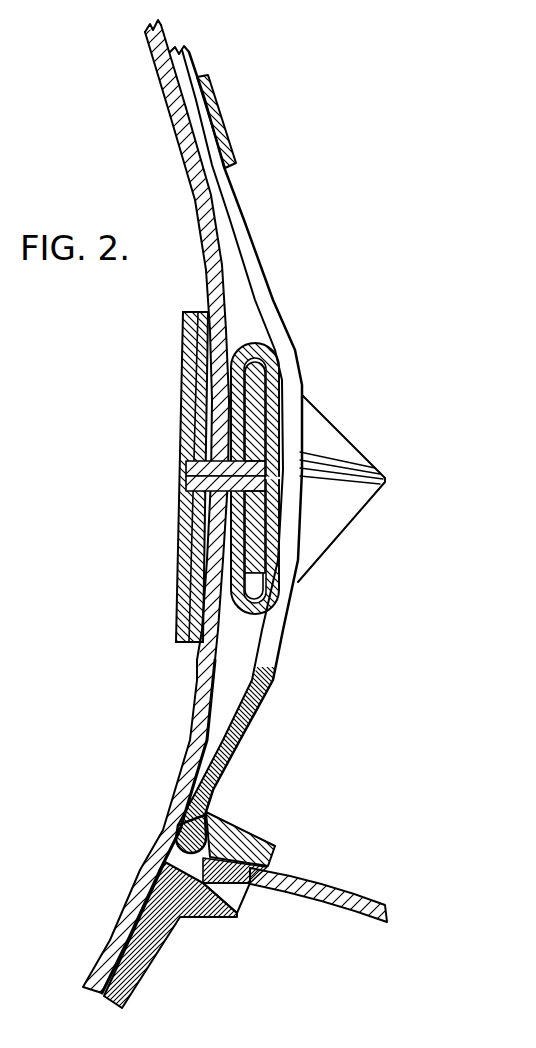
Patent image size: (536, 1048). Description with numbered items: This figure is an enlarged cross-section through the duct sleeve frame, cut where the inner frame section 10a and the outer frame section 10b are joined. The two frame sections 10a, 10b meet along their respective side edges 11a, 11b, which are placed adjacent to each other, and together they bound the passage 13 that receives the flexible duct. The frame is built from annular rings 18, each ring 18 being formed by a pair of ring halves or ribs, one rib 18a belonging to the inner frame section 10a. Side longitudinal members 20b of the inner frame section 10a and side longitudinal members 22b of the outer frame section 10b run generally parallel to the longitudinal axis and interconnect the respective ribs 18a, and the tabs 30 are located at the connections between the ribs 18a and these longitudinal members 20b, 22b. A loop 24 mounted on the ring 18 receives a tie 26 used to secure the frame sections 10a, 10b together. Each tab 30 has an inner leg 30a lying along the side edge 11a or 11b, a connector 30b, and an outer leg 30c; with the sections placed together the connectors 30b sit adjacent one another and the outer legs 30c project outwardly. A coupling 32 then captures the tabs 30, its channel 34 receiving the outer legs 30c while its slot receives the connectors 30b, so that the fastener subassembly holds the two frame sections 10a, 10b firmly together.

The inner frame section 10a is at (154, 58).
The outer frame section 10b is at (88, 984).
The side edge of inner frame section 11a is at (215, 470).
The side edge of outer frame section 11b is at (215, 488).
The passage 13 is at (183, 744).
The annular ring 18 is at (160, 830).
The rib 18a is at (184, 160).
The side longitudinal member 20b is at (202, 312).
The side longitudinal member 22b is at (192, 650).
The loop 24 is at (238, 167).
The tie 26 is at (270, 265).
The tab 30 is at (174, 636).
The inner leg 30a is at (183, 322).
The connector 30b is at (240, 464).
The outer leg 30c is at (253, 382).
The coupling 32 is at (392, 478).
The channel 34 is at (250, 600).